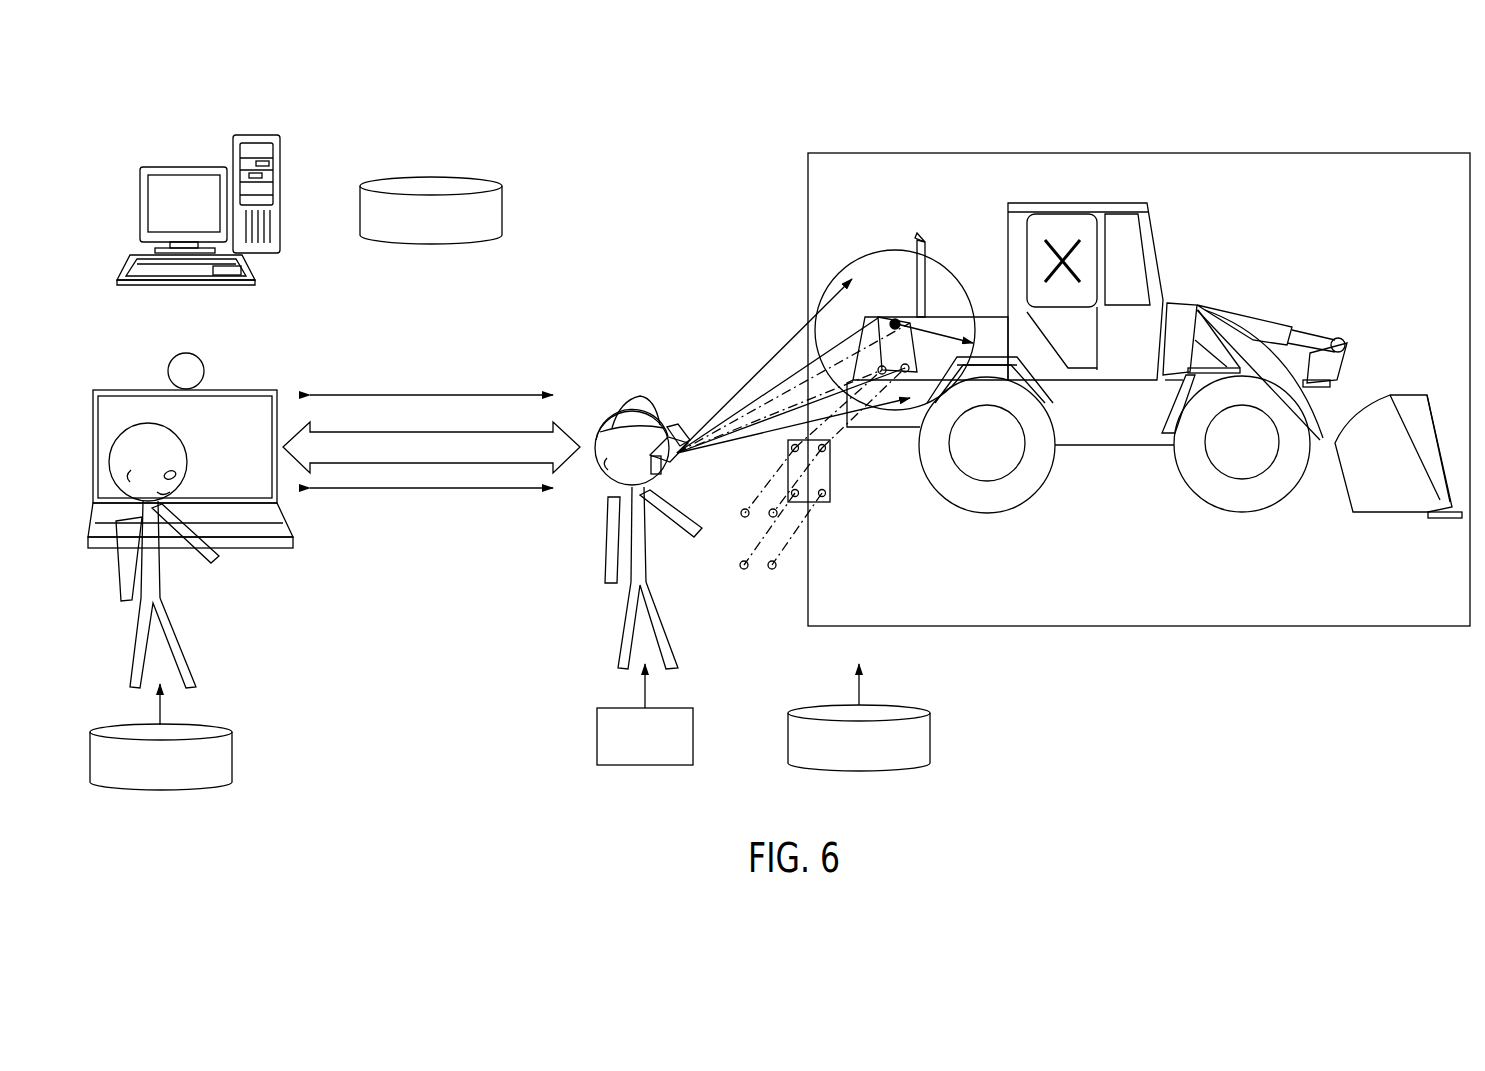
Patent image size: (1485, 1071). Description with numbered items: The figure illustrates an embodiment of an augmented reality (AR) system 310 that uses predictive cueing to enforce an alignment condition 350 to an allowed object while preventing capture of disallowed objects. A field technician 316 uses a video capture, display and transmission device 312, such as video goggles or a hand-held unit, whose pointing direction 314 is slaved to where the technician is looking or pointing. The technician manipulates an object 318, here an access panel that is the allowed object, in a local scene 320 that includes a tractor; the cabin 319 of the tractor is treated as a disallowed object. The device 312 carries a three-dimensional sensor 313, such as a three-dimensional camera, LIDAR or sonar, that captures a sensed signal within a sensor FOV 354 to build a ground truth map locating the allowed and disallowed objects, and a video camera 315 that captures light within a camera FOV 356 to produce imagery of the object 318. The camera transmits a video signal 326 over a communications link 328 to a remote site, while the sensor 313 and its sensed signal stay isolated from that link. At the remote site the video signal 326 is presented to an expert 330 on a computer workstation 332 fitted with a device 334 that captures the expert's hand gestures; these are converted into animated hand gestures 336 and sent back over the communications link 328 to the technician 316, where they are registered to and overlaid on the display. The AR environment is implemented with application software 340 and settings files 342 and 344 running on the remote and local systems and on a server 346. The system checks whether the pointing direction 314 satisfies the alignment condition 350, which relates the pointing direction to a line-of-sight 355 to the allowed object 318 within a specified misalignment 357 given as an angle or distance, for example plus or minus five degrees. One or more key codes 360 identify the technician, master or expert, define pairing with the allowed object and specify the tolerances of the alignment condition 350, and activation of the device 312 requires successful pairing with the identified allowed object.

The augmented reality (AR) system 310 is at (1358, 86).
The video capture, display and transmission device 312 is at (635, 400).
The 3D sensor 313 is at (687, 430).
The pointing direction 314 is at (760, 427).
The video camera 315 is at (672, 460).
The field technician 316 is at (603, 543).
The object 318 is at (832, 478).
The cabin 319 is at (1077, 203).
The local scene 320 is at (1140, 153).
The video signal 326 is at (432, 530).
The communications link 328 is at (432, 433).
The expert 330 is at (170, 602).
The computer workstation 332 is at (148, 388).
The device to capture hand gestures 334 is at (193, 352).
The animated hand gestures 336 is at (432, 323).
The application software 340 is at (505, 205).
The settings file 342 is at (232, 752).
The settings file 344 is at (930, 735).
The server 346 is at (185, 167).
The alignment condition 350 is at (898, 253).
The sensor FOV 354 is at (717, 390).
The line-of-sight (LOS) 355 is at (787, 380).
The camera FOV 356 is at (737, 392).
The misalignment 357 is at (930, 330).
The key code 360 is at (480, 370).